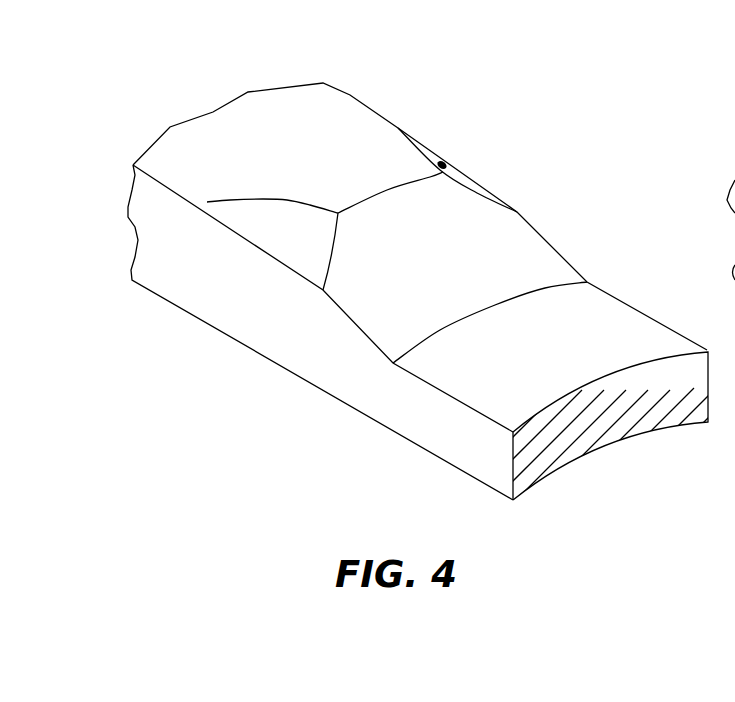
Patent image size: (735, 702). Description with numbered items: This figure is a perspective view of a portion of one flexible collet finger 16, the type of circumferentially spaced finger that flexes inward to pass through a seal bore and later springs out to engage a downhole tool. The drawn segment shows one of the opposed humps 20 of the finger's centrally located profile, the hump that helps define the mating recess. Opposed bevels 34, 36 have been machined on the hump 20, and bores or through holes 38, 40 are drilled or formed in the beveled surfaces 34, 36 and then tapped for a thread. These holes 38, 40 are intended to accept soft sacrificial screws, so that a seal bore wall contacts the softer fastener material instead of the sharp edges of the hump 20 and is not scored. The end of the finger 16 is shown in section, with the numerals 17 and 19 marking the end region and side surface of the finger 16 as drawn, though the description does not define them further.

The finger structure 16 is at (430, 418).
The end face 17 is at (709, 385).
The side surface 19 is at (487, 460).
The hump 20 is at (352, 124).
The bevel 34 is at (255, 217).
The bevel 36 is at (470, 182).
The through hole 38 is at (290, 231).
The through hole 40 is at (442, 162).